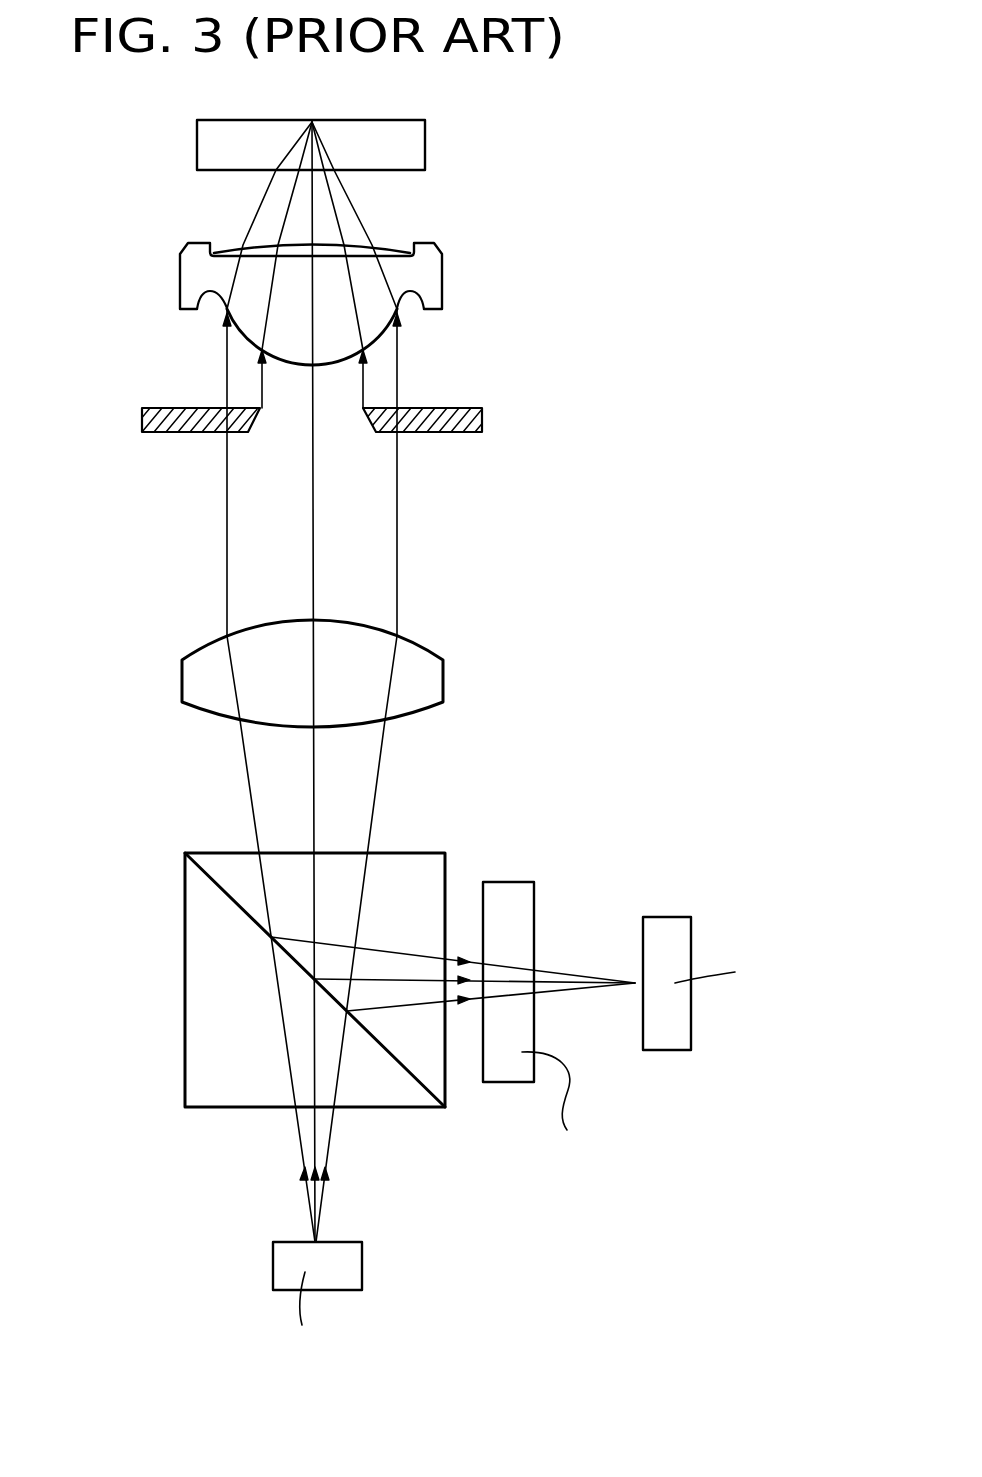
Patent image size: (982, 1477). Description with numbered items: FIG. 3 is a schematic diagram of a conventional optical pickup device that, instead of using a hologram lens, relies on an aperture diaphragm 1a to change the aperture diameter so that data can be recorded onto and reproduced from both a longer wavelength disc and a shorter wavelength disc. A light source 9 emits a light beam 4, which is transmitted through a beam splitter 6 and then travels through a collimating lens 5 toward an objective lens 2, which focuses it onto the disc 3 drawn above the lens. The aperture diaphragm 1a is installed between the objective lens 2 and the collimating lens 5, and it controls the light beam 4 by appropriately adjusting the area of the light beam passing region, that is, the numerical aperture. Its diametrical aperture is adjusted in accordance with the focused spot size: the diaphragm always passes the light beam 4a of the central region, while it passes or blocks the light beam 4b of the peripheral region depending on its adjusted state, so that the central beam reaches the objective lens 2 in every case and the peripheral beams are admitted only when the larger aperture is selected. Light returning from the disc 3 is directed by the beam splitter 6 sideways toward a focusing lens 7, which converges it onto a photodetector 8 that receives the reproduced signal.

The aperture diaphragm 1a is at (467, 408).
The objective lens 2 is at (180, 267).
The optical disc 3 is at (200, 118).
The light beam 4 is at (182, 527).
The light beam of the central region 4a is at (313, 503).
The light beam of the peripheral region 4b is at (227, 503).
The collimating lens 5 is at (443, 683).
The beam splitter 6 is at (185, 995).
The focusing lens 7 is at (515, 1082).
The photodetector 8 is at (664, 917).
The light source 9 is at (362, 1265).